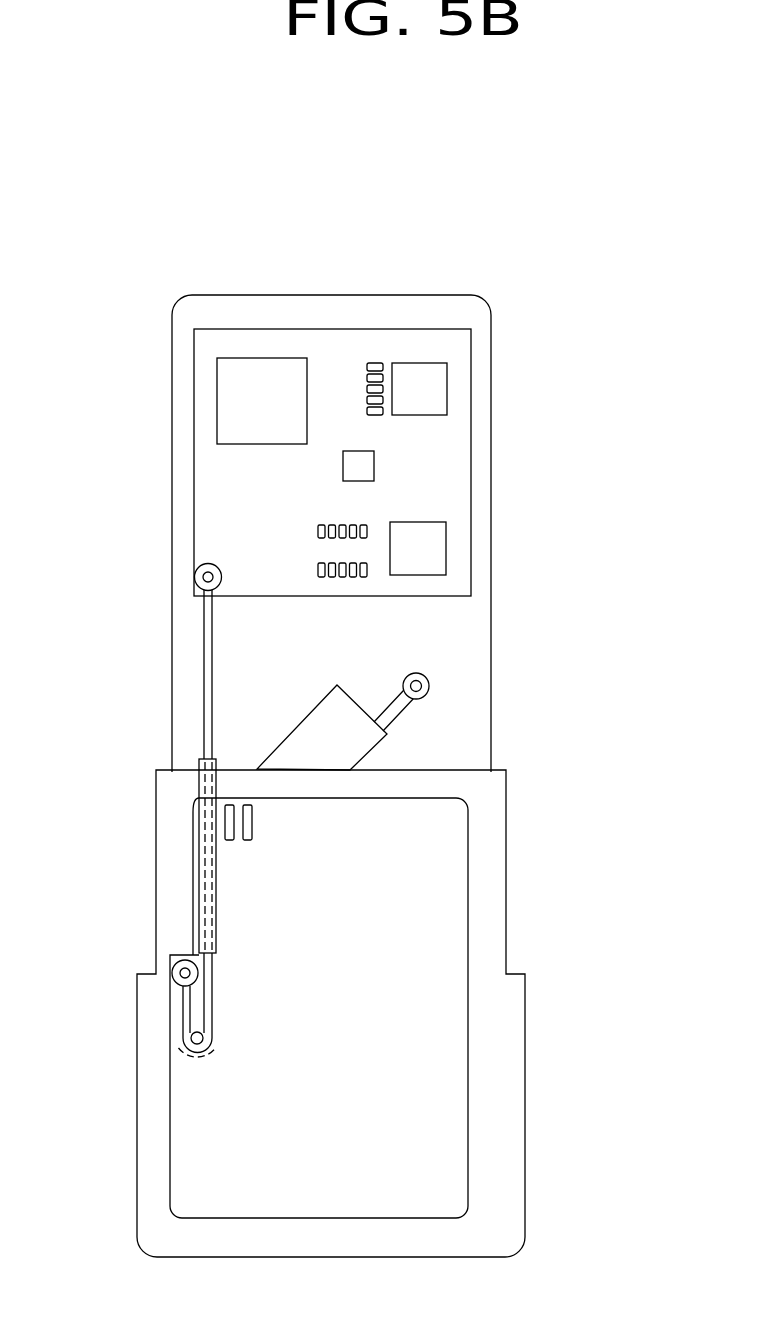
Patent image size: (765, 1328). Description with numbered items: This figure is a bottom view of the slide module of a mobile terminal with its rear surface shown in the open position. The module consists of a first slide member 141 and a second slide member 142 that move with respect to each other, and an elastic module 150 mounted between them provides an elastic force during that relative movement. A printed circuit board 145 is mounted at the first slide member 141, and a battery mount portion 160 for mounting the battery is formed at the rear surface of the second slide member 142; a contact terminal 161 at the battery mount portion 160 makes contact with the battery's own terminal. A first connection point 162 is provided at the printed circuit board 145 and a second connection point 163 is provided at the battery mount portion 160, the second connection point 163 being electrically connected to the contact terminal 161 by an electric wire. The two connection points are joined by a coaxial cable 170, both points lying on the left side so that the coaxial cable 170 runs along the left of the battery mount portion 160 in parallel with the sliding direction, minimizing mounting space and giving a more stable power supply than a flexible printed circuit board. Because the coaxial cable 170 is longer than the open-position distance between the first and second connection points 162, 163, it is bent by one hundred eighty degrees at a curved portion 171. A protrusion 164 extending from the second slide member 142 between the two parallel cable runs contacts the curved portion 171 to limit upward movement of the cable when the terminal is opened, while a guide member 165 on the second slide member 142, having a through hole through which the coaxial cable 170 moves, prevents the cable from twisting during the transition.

The first slide member 141 is at (180, 496).
The second slide member 142 is at (168, 895).
The printed circuit board 145 is at (205, 431).
The elastic module 150 is at (393, 743).
The battery mount portion 160 is at (270, 855).
The contact terminal 161 is at (226, 819).
The first connection point 162 is at (195, 576).
The second connection point 163 is at (183, 972).
The protrusion 164 is at (193, 1037).
The guide member 165 is at (198, 933).
The coaxial cable 170 is at (203, 671).
The curved portion 171 is at (198, 1058).